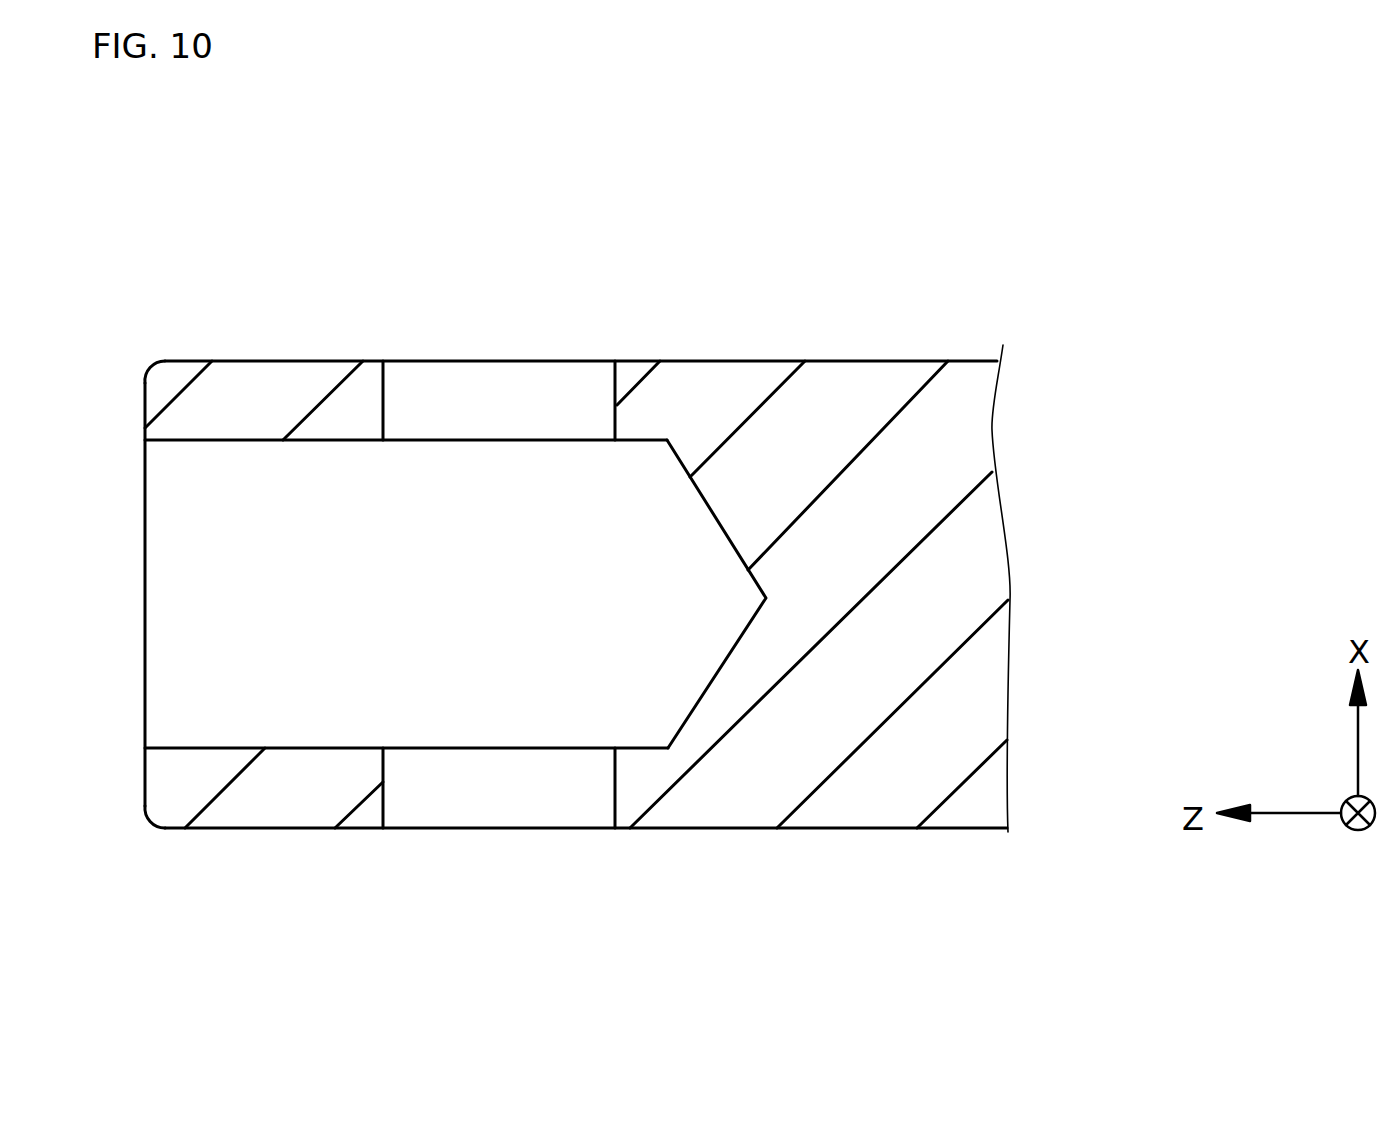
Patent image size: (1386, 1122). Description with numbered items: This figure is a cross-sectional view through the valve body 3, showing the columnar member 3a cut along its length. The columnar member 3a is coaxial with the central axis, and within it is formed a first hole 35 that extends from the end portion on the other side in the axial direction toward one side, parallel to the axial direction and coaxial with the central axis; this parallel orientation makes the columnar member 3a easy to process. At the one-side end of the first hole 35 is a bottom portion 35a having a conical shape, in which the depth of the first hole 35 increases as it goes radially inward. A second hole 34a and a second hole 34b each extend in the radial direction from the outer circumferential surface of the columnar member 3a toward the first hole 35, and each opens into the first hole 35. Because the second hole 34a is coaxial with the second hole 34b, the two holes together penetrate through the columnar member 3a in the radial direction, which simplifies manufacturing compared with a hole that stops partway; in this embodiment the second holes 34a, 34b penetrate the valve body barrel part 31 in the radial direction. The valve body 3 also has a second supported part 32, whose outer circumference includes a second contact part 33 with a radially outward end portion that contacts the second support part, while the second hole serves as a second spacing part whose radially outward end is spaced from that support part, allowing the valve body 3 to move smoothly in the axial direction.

The valve body 3 is at (945, 430).
The columnar member 3a is at (815, 405).
The valve body barrel part 31 is at (893, 800).
The second supported part 32 is at (310, 808).
The second contact part 33 is at (214, 810).
The second hole 34a is at (383, 413).
The second hole 34b is at (383, 785).
The first hole 35 is at (307, 442).
The bottom portion 35a is at (706, 501).